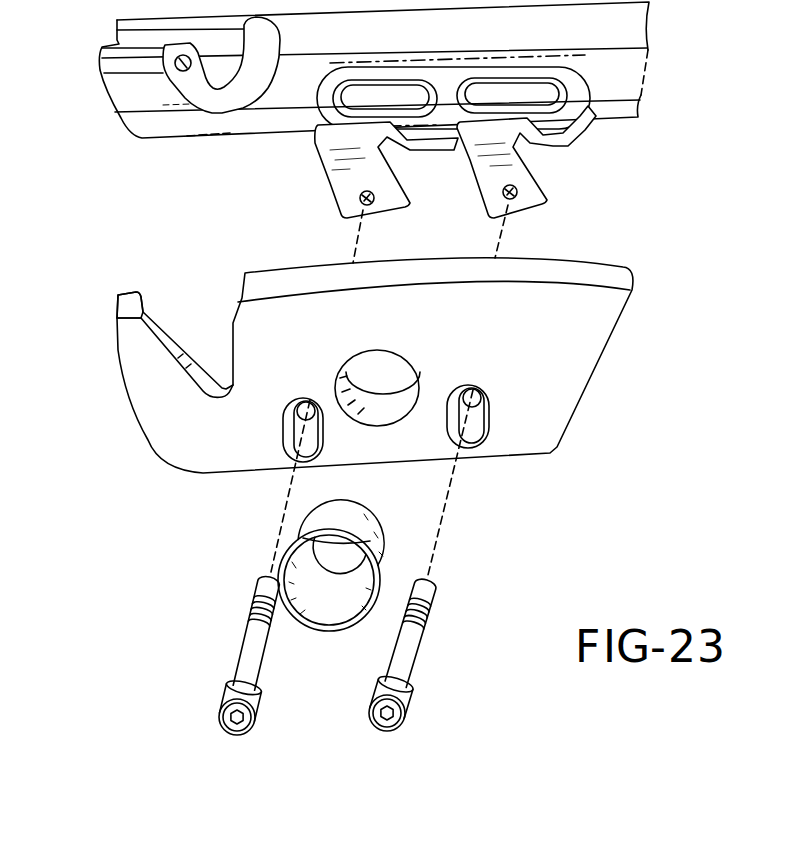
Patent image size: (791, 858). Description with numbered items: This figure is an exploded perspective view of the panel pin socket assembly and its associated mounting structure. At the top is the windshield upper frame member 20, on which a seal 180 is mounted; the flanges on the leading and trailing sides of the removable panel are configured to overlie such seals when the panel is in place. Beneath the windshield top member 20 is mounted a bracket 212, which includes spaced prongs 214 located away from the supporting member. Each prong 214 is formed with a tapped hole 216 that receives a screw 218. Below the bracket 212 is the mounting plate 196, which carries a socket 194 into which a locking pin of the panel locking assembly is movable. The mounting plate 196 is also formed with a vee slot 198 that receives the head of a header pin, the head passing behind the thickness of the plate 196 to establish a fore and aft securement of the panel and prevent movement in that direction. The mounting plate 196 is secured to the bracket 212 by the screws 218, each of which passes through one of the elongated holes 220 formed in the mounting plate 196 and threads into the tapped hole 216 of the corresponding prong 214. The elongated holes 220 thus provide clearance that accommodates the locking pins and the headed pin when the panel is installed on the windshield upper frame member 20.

The seal 180 is at (345, 86).
The windshield upper frame member 20 is at (272, 101).
The bracket 212 is at (431, 184).
The prong 214 is at (342, 200).
The bracket hole 216 is at (374, 201).
The vee slot 198 is at (147, 314).
The mounting plate 196 is at (356, 407).
The elongated hole 220 is at (300, 446).
The socket 194 is at (327, 613).
The screw 218 is at (232, 700).